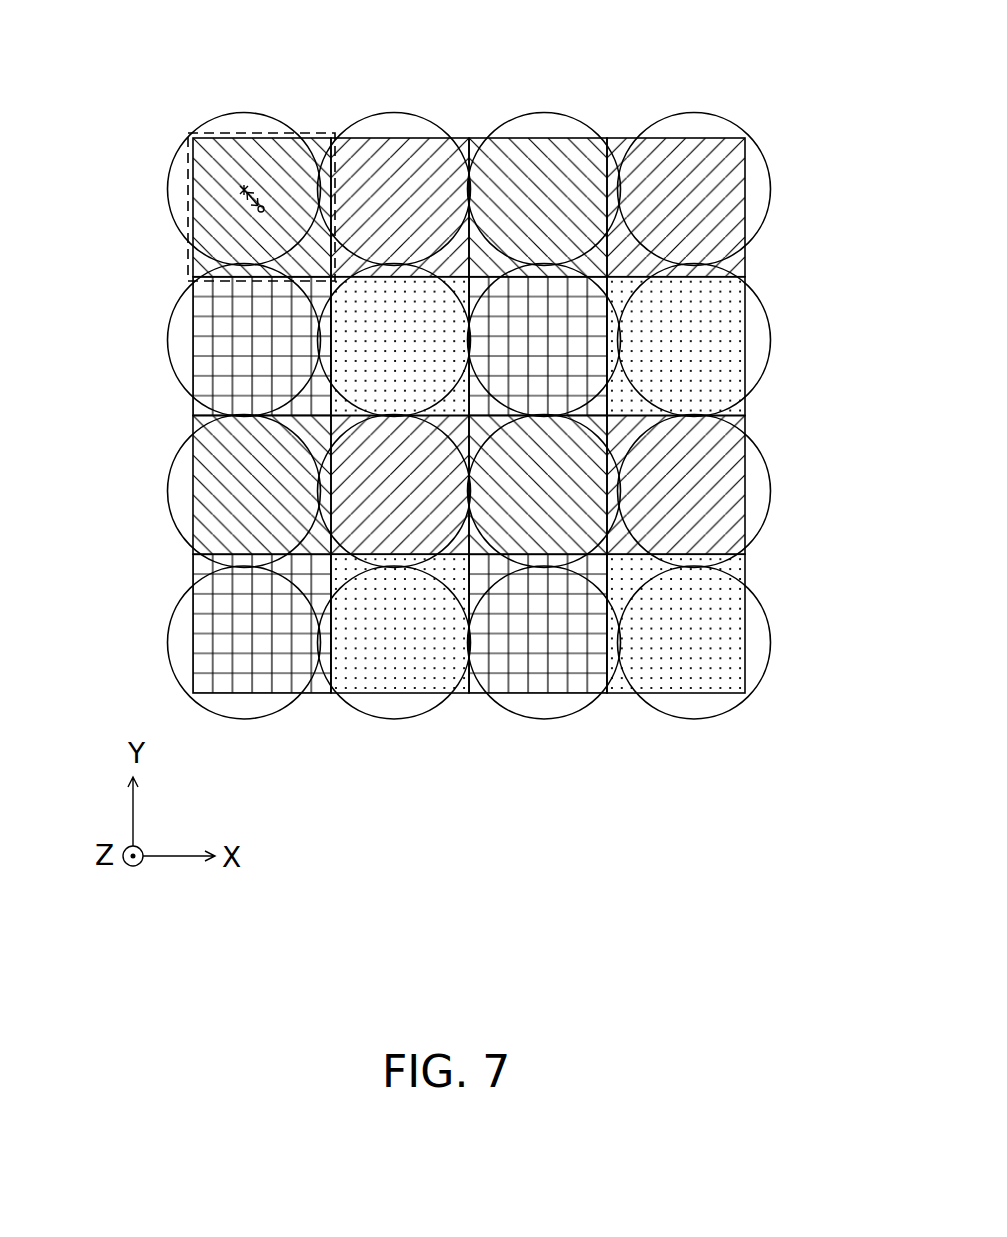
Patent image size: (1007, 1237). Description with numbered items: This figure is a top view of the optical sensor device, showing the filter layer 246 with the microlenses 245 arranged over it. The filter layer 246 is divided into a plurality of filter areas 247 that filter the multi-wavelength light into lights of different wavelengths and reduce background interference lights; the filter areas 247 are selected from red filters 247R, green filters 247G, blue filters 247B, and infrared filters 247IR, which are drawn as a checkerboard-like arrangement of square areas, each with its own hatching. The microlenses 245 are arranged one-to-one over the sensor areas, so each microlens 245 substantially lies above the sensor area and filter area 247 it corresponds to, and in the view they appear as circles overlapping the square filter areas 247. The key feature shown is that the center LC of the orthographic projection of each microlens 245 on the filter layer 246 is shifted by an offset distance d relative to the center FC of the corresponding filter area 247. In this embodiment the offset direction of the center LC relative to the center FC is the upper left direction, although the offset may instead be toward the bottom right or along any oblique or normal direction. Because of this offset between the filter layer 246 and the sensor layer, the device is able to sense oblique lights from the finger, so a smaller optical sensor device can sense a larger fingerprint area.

The microlens 245 is at (223, 112).
The filter layer 246 is at (451, 387).
The filter area 247 is at (187, 256).
The green filter 247G is at (317, 137).
The blue filter 247B is at (458, 137).
The red filter 247R is at (192, 413).
The infrared filter 247IR is at (744, 415).
The center of orthographic projection of microlens LC is at (243, 190).
The center of filter area FC is at (258, 209).
The offset distance d is at (258, 189).